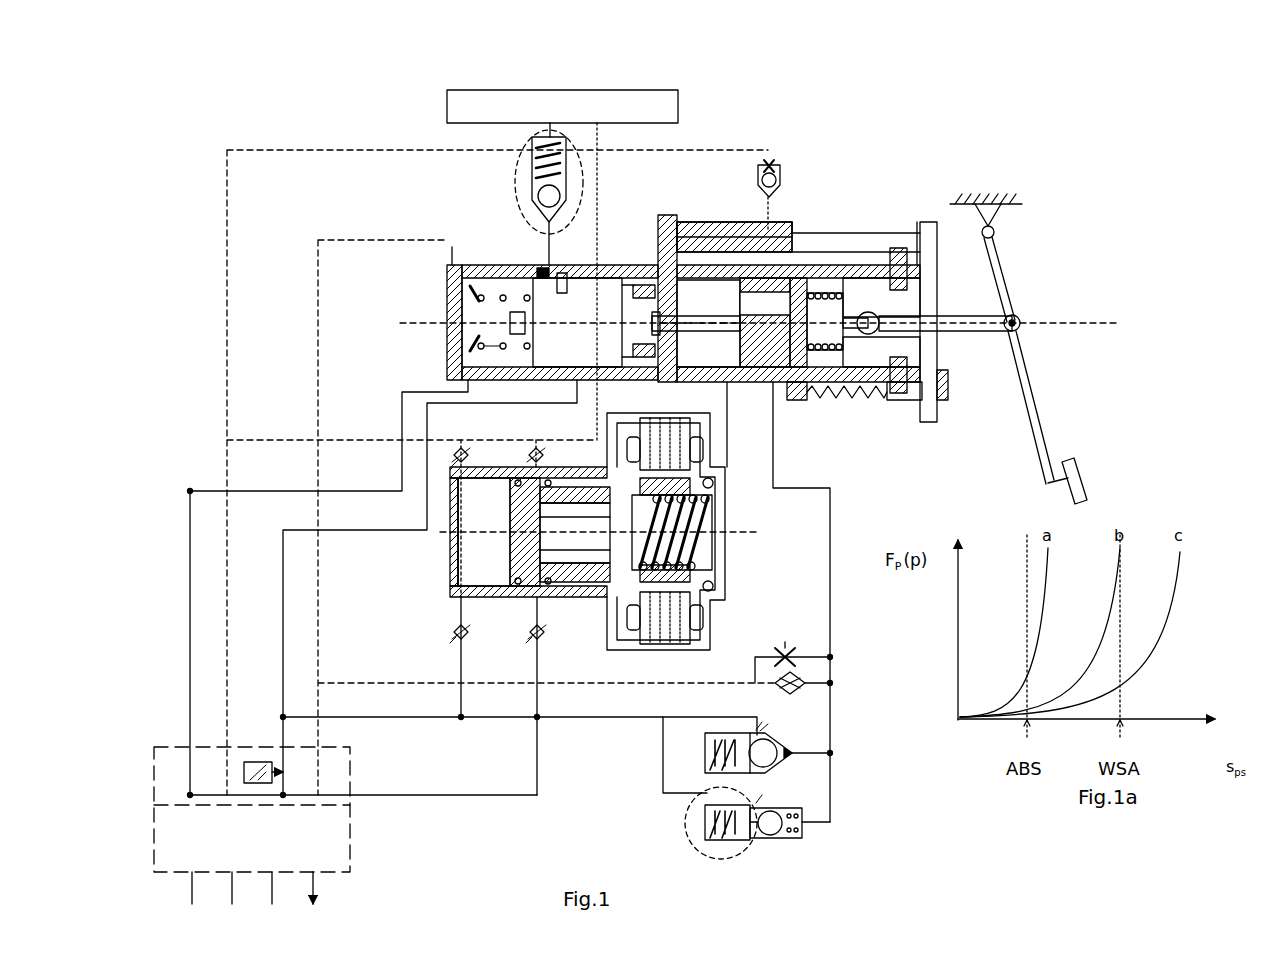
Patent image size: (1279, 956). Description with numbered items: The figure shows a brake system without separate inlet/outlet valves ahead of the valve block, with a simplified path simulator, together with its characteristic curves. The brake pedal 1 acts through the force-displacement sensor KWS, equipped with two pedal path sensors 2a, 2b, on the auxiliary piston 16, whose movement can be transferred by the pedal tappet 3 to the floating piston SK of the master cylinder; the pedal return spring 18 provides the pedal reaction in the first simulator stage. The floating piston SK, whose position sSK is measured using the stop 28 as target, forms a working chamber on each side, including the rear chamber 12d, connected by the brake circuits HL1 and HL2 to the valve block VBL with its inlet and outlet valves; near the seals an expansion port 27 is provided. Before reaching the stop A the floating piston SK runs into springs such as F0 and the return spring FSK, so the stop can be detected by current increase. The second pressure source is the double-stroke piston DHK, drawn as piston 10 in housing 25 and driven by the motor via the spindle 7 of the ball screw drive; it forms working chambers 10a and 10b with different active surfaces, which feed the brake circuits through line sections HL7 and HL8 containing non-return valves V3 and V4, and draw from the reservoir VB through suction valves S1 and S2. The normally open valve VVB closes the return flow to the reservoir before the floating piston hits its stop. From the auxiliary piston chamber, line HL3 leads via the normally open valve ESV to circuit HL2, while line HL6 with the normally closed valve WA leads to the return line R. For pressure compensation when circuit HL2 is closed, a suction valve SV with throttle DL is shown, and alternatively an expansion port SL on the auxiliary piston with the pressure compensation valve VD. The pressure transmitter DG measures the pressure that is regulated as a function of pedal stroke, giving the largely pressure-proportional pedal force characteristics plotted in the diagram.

The brake pedal 1 is at (1046, 490).
The pedal path sensor master 2a is at (780, 232).
The pedal path sensor slave 2b is at (734, 237).
The pedal tappet 3 is at (718, 313).
The expansion port 27 is at (548, 269).
The stop 28 is at (566, 269).
The spindle 7 is at (684, 534).
The double-stroke piston 10 is at (567, 570).
The working chamber 10a is at (473, 557).
The working chamber 10b is at (540, 587).
The working chamber on floating piston rear side 12d is at (632, 362).
The auxiliary piston 16 is at (778, 384).
The pedal return spring 18 is at (840, 394).
The DHK housing 25 is at (510, 503).
The reservoir VB is at (562, 113).
The normally open valve to reservoir VVB is at (532, 181).
The pressure compensation valve VD is at (783, 178).
The floating piston SK is at (577, 322).
The floating piston position sSK is at (452, 251).
The spring on piston F0 is at (462, 297).
The return spring SK FSK is at (462, 344).
The stop A is at (650, 358).
The expansion port SL is at (778, 246).
The force displacement sensor KWS is at (840, 290).
The hydraulic line or brake circuit section HL1 is at (190, 548).
The hydraulic line or brake circuit section HL2 is at (283, 548).
The hydraulic line HL3 is at (832, 637).
The hydraulic line HL6 is at (665, 757).
The hydraulic line or brake circuit section HL7 is at (360, 720).
The hydraulic line or brake circuit section HL8 is at (412, 798).
The return line R is at (226, 655).
The non-return valve or suction valve S1 is at (464, 447).
The non-return valve or suction valve S2 is at (533, 447).
The non-return valve or pressure relief valve V3 is at (439, 657).
The non-return valve or pressure relief valve V4 is at (514, 696).
The double-stroke piston DHK is at (458, 521).
The suction valve SV is at (810, 694).
The normally open solenoid valve ESV is at (776, 765).
The normally closed solenoid valve WA is at (806, 838).
The throttle DL is at (695, 840).
The pressure transmitter DG is at (266, 760).
The valve block VBL is at (352, 868).